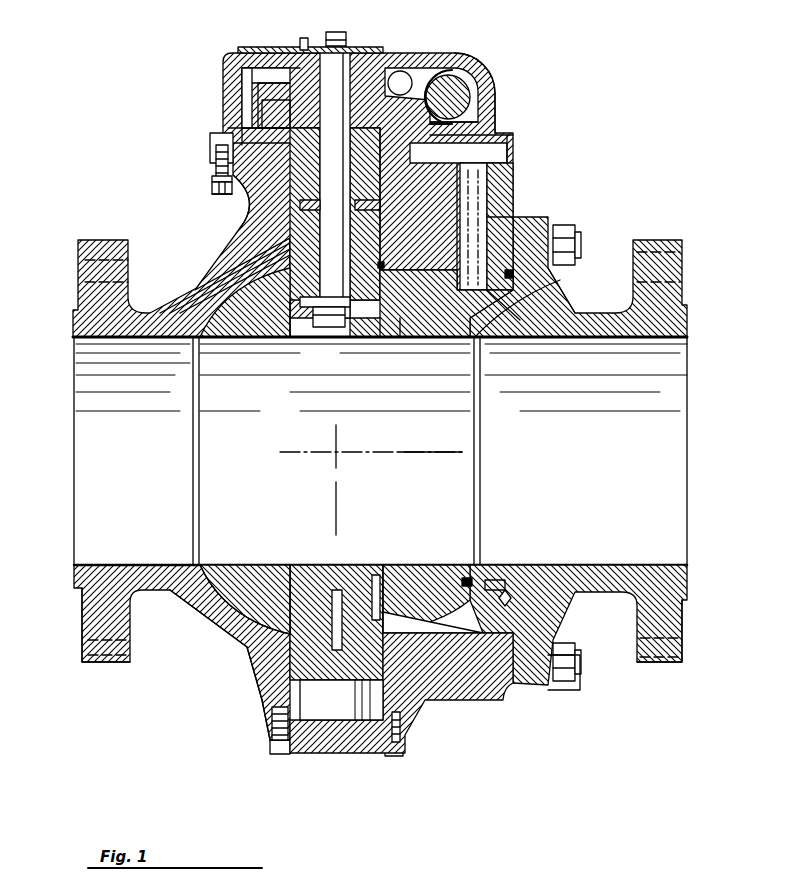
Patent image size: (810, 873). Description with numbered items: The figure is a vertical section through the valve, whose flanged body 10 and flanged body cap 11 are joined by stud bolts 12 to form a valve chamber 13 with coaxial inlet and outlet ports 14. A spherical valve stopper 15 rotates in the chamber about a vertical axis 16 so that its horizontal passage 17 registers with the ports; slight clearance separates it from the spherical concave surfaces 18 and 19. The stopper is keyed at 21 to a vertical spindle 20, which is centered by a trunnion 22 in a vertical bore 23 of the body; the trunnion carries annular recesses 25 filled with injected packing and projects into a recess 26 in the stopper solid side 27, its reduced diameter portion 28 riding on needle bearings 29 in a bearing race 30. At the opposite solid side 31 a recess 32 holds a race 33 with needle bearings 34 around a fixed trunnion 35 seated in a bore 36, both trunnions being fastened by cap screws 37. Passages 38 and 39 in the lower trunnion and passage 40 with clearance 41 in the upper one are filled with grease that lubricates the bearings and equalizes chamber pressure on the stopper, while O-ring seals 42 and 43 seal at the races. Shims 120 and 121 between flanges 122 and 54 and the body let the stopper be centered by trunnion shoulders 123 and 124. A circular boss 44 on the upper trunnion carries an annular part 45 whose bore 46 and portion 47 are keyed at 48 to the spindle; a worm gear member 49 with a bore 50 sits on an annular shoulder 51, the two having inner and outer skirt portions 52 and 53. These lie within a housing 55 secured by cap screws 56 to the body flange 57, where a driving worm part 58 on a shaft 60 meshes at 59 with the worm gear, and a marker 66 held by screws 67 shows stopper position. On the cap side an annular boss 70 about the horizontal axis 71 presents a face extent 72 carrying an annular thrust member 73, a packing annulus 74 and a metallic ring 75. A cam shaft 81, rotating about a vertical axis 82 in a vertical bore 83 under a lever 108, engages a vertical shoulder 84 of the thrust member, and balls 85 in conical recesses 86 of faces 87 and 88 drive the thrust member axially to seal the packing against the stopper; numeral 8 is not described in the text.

The port 8 is at (517, 283).
The flanged body 10 is at (73, 327).
The flanged body cap 11 is at (687, 322).
The stud bolts 12 is at (578, 232).
The valve chamber 13 is at (436, 230).
The inlet and outlet ports 14 is at (192, 563).
The valve stopper 15 is at (262, 563).
The vertical axis 16 is at (330, 472).
The horizontal passage 17 is at (293, 565).
The spherical concave surface 18 is at (200, 340).
The spherical concave surface 19 is at (462, 330).
The vertical spindle 20 is at (290, 242).
The key 21 is at (330, 327).
The trunnion 22 is at (262, 200).
The vertical bore 23 is at (388, 196).
The annular recesses 25 is at (352, 205).
The recess 26 is at (298, 320).
The stopper solid side 27 is at (258, 325).
The reduced diameter portion 28 is at (372, 325).
The needle bearings 29 is at (382, 325).
The bearing race 30 is at (397, 330).
The opposite solid side 31 is at (218, 565).
The recess 32 is at (342, 578).
The race 33 is at (412, 565).
The needle bearings 34 is at (382, 578).
The fixed trunnion 35 is at (342, 712).
The bore 36 is at (372, 745).
The cap screws 37 is at (258, 192).
The passage 38 is at (265, 688).
The passage 39 is at (312, 650).
The passage 40 is at (285, 252).
The clearance 41 is at (302, 286).
The O-ring seal 42 is at (262, 262).
The O-ring seal 43 is at (260, 670).
The circular boss 44 is at (316, 148).
The annular part 45 is at (392, 78).
The bore 46 is at (350, 160).
The portion 47 is at (282, 88).
The key 48 is at (340, 50).
The annular worm gear member 49 is at (410, 62).
The bore 50 is at (280, 108).
The annular shoulder 51 is at (240, 112).
The inner skirt portion 52 is at (230, 138).
The outer skirt portion 53 is at (226, 150).
The flange 54 is at (216, 162).
The housing 55 is at (225, 62).
The cap screws 56 is at (210, 190).
The flange 57 is at (212, 178).
The driving worm part 58 is at (478, 62).
The mesh 59 is at (498, 78).
The shaft 60 is at (452, 78).
The marker 66 is at (268, 46).
The screws 67 is at (308, 48).
The annular boss 70 is at (498, 332).
The horizontal axis 71 is at (402, 455).
The annular face extent 72 is at (522, 328).
The annular thrust member 73 is at (505, 590).
The annulus of packing material 74 is at (466, 576).
The metallic ring 75 is at (455, 582).
The cam shaft 81 is at (510, 212).
The vertical axis 82 is at (500, 170).
The vertical bore 83 is at (505, 192).
The vertical shoulder 84 is at (563, 306).
The balls 85 is at (555, 570).
The conical recesses 86 is at (522, 585).
The face 87 is at (488, 615).
The face 88 is at (558, 632).
The lever 108 is at (513, 150).
The shim 120 is at (270, 738).
The shim 121 is at (402, 160).
The flange 122 is at (410, 735).
The trunnion shoulder 123 is at (390, 262).
The trunnion shoulder 124 is at (237, 652).